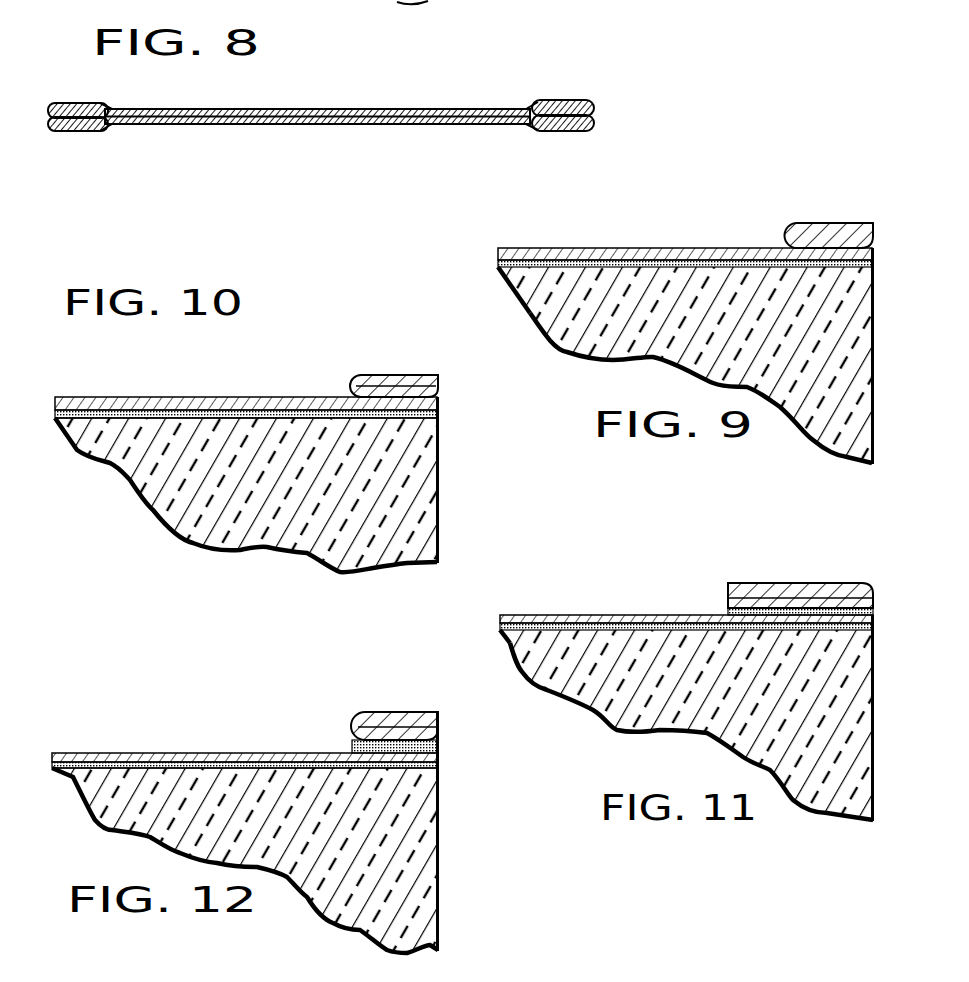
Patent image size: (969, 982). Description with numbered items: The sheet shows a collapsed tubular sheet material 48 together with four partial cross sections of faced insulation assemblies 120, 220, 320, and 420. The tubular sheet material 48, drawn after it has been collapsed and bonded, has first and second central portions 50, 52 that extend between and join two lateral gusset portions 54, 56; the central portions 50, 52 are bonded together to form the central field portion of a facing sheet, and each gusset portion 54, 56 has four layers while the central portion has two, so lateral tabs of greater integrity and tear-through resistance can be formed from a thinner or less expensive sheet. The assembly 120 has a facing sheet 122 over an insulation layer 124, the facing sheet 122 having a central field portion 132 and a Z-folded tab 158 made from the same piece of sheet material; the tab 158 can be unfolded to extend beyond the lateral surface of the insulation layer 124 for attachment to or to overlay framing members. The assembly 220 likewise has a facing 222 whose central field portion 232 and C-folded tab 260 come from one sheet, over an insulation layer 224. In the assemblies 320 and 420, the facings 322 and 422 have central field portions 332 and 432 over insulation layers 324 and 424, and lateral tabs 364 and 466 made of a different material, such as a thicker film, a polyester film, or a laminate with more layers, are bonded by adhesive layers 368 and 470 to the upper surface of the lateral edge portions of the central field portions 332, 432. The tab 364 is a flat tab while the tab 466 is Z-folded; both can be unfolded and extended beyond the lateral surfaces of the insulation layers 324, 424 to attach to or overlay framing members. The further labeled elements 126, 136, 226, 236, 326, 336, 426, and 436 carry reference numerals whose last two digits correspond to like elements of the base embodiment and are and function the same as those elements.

In FIG. 8, the collapsed tubular sheet material 48 is at (348, 102).
In FIG. 8, the first central portion 50 is at (355, 109).
In FIG. 8, the second central portion 52 is at (343, 127).
In FIG. 8, the first lateral gusset portion 54 is at (73, 132).
In FIG. 8, the second lateral gusset portion 56 is at (573, 101).
In FIG. 9, the faced insulation assembly 120 is at (663, 296).
In FIG. 9, the facing sheet 122 is at (685, 209).
In FIG. 9, the insulation layer 124 is at (655, 346).
In FIG. 9, the edge of substrate 126 is at (532, 245).
In FIG. 9, the central field portion 132 is at (600, 215).
In FIG. 9, the adhesive layer 136 is at (637, 248).
In FIG. 9, the Z-folded tab 158 is at (833, 223).
In FIG. 10, the faced insulation assembly 220 is at (284, 416).
In FIG. 10, the facing 222 is at (246, 400).
In FIG. 10, the insulation layer 224 is at (360, 505).
In FIG. 10, the interface 226 is at (158, 418).
In FIG. 10, the central field portion 232 is at (123, 372).
In FIG. 10, the adhesive layer 236 is at (287, 407).
In FIG. 10, the C-folded tab 260 is at (427, 372).
In FIG. 11, the faced insulation assembly 320 is at (701, 667).
In FIG. 11, the facing 322 is at (686, 609).
In FIG. 11, the insulation layer 324 is at (669, 694).
In FIG. 11, the edge of substrate 326 is at (527, 613).
In FIG. 11, the central field portion 332 is at (645, 580).
In FIG. 11, the adhesive layer 336 is at (617, 632).
In FIG. 11, the lateral tab 364 is at (833, 593).
In FIG. 11, the adhesive layer 368 is at (873, 598).
In FIG. 12, the faced insulation assembly 420 is at (282, 789).
In FIG. 12, the facing 422 is at (245, 739).
In FIG. 12, the insulation layer 424 is at (377, 858).
In FIG. 12, the interface 426 is at (195, 755).
In FIG. 12, the central field portion 432 is at (237, 700).
In FIG. 12, the top fabric layer 436 is at (113, 728).
In FIG. 12, the Z-folded tab 466 is at (432, 729).
In FIG. 12, the adhesive layer 470 is at (438, 745).